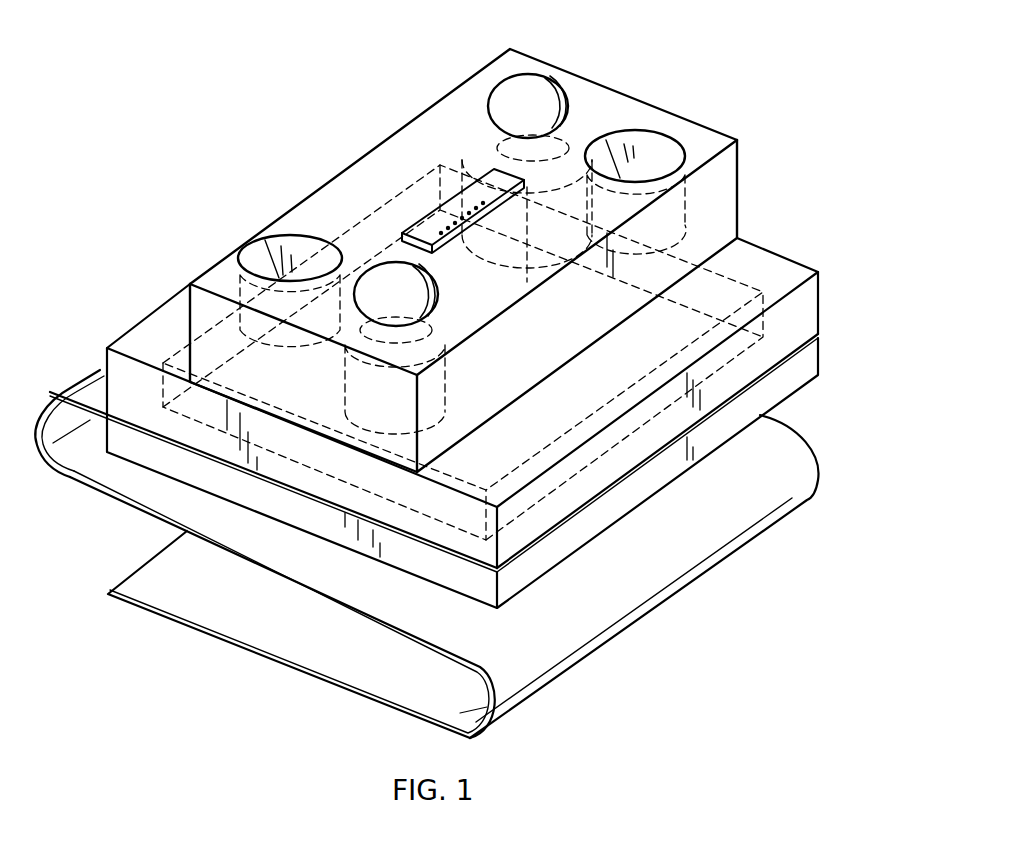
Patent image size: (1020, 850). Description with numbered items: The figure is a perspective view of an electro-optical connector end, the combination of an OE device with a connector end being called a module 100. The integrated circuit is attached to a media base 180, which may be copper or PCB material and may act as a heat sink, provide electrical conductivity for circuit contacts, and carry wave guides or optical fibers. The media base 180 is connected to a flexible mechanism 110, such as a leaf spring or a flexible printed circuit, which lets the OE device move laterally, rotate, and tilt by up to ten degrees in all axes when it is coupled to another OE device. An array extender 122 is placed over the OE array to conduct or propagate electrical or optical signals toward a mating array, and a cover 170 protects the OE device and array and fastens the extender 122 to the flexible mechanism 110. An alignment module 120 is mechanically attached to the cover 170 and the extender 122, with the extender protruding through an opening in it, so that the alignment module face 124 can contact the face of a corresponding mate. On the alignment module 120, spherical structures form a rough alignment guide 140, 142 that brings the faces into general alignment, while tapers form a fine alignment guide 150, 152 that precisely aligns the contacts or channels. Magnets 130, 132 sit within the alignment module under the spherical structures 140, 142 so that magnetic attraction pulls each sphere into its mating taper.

The module 100 is at (467, 374).
The flexible mechanism 110 is at (821, 468).
The alignment module 120 is at (461, 349).
The array extender 122 is at (437, 212).
The alignment module face 124 is at (495, 78).
The magnet 130 is at (355, 410).
The magnet 132 is at (470, 152).
The rough alignment guide 140 is at (355, 298).
The rough alignment guide 142 is at (548, 80).
The fine alignment guide 150 is at (238, 245).
The fine alignment guide 152 is at (673, 142).
The cover 170 is at (821, 300).
The media base 180 is at (821, 355).